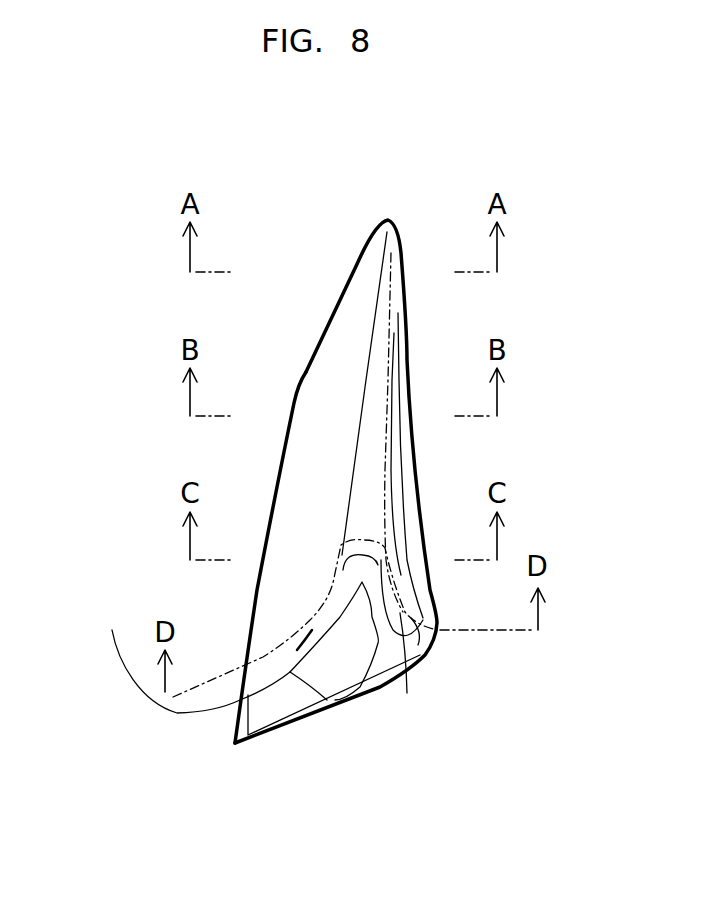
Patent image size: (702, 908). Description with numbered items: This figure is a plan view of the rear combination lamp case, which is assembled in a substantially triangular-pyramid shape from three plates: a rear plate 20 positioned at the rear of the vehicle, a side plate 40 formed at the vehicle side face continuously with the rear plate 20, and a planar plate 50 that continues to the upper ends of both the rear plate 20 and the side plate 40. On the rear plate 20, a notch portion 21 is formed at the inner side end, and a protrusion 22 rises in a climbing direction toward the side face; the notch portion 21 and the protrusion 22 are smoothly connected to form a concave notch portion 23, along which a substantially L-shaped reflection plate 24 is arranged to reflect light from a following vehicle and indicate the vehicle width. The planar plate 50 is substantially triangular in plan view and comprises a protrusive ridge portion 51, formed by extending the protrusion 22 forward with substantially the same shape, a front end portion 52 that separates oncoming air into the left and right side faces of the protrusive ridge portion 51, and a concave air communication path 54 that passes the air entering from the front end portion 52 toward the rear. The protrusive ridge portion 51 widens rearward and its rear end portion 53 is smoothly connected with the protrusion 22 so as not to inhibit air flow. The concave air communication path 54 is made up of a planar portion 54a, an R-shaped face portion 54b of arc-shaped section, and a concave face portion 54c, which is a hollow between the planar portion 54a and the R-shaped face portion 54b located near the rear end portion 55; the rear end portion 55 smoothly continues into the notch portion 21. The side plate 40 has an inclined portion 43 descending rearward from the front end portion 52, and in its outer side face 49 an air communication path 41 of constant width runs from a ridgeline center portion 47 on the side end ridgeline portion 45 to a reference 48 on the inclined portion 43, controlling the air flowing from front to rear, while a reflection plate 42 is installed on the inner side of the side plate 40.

The rear plate 20 is at (340, 725).
The notch portion 21 is at (186, 656).
The protrusion 22 is at (349, 583).
The concave notch portion 23 is at (88, 578).
The reflection plate 24 is at (235, 733).
The side plate 40 is at (440, 460).
The air communication path 41 is at (425, 605).
The reflection plate 42 is at (410, 568).
The inclined portion 43 is at (413, 485).
The side end ridgeline portion 45 is at (420, 633).
The ridgeline center portion 47 is at (405, 665).
The reference 48 is at (420, 553).
The outer side face 49 is at (412, 324).
The planar plate 50 is at (280, 358).
The protrusive ridge portion 51 is at (360, 460).
The front end portion 52 is at (393, 217).
The rear end portion 53 is at (355, 557).
The concave air communication path 54 is at (290, 214).
The planar portion 54a is at (368, 260).
The R-shaped face portion 54b is at (369, 337).
The concave face portion 54c is at (283, 640).
The rear end portion 55 is at (270, 650).